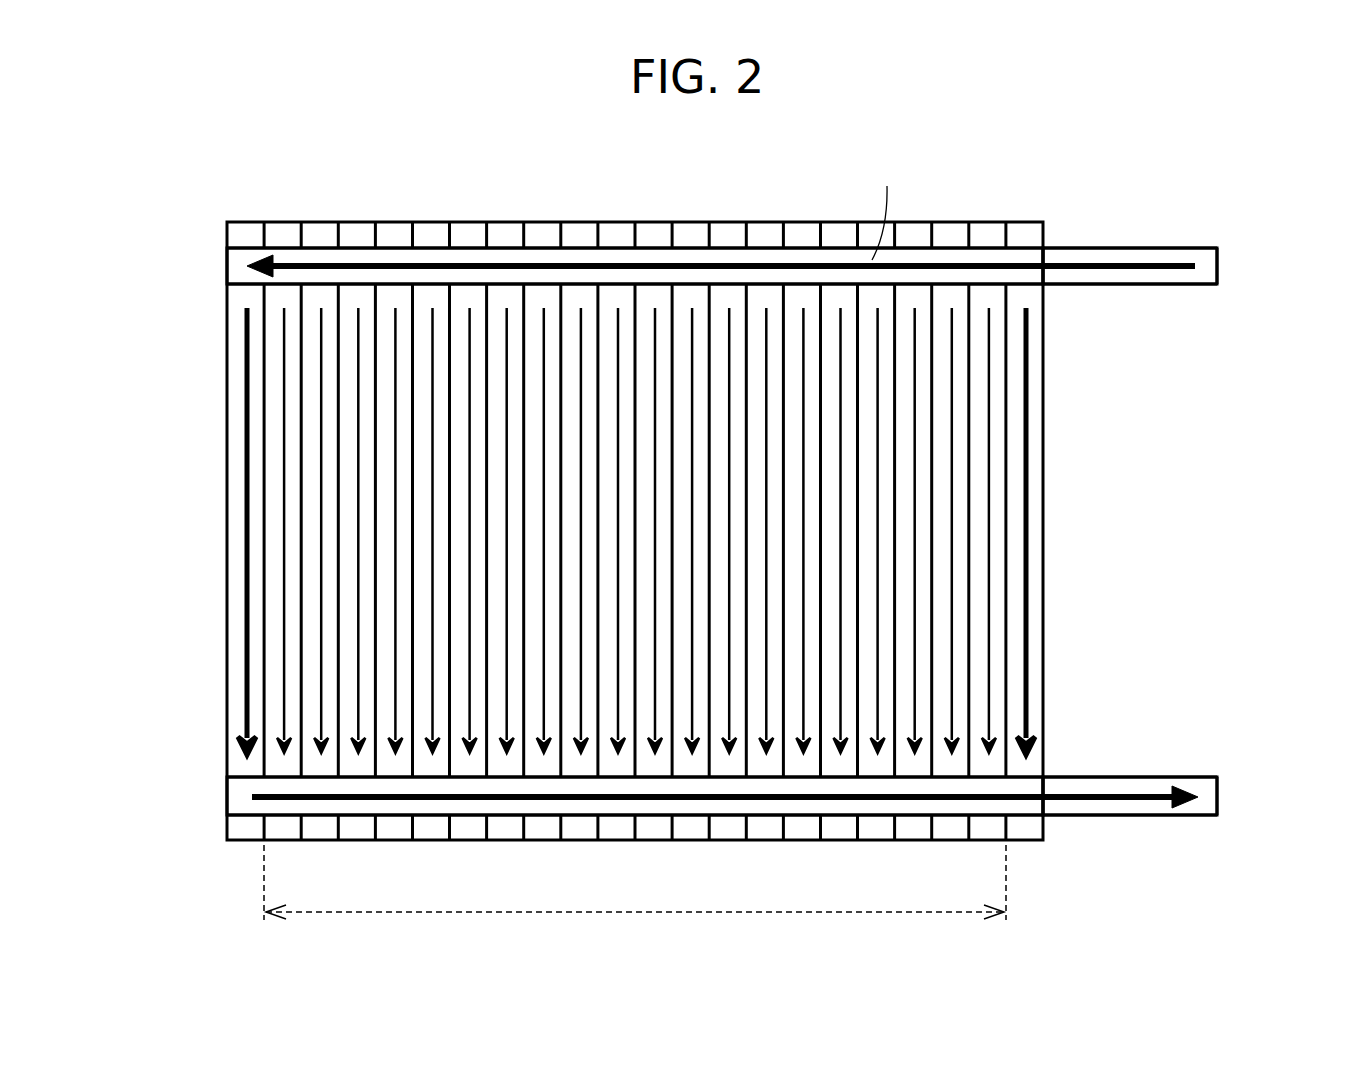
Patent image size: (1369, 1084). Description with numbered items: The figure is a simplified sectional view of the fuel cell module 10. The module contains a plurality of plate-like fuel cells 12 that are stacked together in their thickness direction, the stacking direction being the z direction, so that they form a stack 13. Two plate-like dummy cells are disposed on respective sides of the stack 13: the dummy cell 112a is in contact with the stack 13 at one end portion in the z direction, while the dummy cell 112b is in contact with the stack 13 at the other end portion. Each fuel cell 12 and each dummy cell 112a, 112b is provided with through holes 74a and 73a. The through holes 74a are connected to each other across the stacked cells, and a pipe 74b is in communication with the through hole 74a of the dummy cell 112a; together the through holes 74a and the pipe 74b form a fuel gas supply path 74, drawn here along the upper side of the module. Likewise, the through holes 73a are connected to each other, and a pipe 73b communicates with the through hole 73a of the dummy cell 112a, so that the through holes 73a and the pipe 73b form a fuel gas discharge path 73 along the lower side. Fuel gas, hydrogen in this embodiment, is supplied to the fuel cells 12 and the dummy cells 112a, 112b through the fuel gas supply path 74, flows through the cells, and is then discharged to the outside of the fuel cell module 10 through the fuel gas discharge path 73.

The fuel cell module 10 is at (98, 239).
The fuel cells 12 is at (386, 236).
The stack 13 is at (635, 895).
The dummy cell 112a is at (1023, 234).
The dummy cell 112b is at (246, 238).
The fuel gas supply path 74 is at (1248, 271).
The through holes 74a is at (698, 252).
The pipe 74b is at (1135, 243).
The fuel gas discharge path 73 is at (1250, 802).
The through holes 73a is at (698, 803).
The pipe 73b is at (1137, 817).